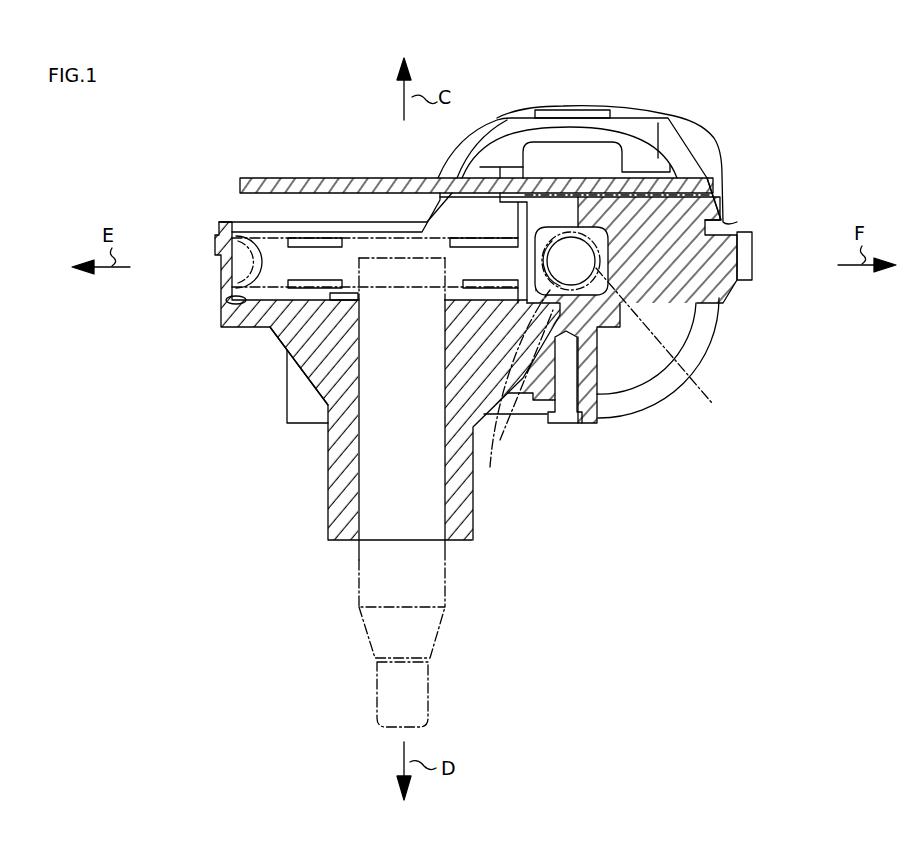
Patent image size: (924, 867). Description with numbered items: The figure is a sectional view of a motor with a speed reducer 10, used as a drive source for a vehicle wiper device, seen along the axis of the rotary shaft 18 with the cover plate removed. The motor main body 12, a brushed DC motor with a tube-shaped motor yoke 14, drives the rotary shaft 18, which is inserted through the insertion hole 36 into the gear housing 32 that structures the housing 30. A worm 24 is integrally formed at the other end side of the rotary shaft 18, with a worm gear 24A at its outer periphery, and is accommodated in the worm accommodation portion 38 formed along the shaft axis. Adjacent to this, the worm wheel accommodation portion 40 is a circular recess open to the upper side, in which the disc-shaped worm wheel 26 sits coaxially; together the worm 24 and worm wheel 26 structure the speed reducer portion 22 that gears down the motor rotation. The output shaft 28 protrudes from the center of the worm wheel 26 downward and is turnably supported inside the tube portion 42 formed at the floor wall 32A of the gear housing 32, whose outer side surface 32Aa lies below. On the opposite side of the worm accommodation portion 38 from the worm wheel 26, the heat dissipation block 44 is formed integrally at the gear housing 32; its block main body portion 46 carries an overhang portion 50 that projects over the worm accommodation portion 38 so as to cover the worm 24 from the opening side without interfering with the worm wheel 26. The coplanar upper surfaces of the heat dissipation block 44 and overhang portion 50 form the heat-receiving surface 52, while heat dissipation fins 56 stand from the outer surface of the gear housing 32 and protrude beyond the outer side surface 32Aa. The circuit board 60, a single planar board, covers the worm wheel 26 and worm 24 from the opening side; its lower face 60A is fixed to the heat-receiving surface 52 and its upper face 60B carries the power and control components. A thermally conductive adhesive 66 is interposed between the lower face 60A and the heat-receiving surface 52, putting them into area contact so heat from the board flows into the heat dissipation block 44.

The motor with a speed reducer 10 is at (492, 393).
The motor main body 12 is at (691, 371).
The motor yoke 14 is at (663, 395).
The rotary shaft 18 is at (708, 390).
The speed reducer portion 22 is at (573, 392).
The worm 24 is at (552, 396).
The worm gear 24A is at (565, 377).
The worm wheel 26 is at (494, 460).
The output shaft 28 is at (358, 567).
The housing 30 is at (222, 330).
The gear housing 32 is at (341, 366).
The floor wall 32A is at (238, 332).
The outer side surface 32Aa is at (247, 324).
The insertion hole 36 is at (561, 228).
The worm accommodation portion 38 is at (600, 265).
The worm wheel accommodation portion 40 is at (230, 300).
The tube portion 42 is at (328, 488).
The heat dissipation block 44 is at (696, 212).
The block main body portion 46 is at (730, 221).
The overhang portion 50 is at (601, 151).
The heat-receiving surface 52 is at (667, 198).
The heat dissipation fins 56 is at (603, 285).
The circuit board 60 is at (432, 143).
The lower face 60A is at (432, 194).
The upper face 60B is at (252, 193).
The thermally conductive adhesive 66 is at (700, 185).